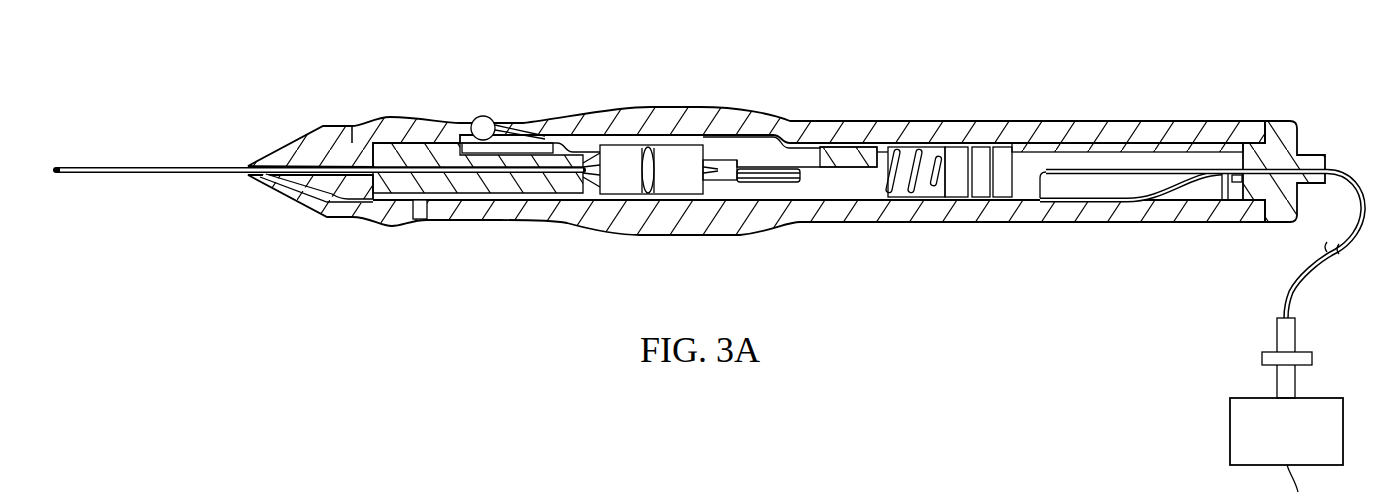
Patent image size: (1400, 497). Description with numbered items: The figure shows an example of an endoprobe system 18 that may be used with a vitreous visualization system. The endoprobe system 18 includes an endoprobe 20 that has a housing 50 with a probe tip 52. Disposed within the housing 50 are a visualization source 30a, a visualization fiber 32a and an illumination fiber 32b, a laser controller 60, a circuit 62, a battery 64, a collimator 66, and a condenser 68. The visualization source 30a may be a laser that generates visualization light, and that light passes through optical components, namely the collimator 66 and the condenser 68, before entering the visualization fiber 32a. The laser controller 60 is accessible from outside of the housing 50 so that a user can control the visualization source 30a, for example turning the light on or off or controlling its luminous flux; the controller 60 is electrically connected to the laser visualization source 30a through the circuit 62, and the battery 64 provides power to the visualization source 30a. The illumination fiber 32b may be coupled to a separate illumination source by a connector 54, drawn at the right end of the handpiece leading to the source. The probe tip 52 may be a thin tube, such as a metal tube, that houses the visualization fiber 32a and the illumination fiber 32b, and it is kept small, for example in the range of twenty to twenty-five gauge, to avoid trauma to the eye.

The endoprobe system 18 is at (997, 77).
The endoprobe 20 is at (777, 225).
The visualization source 30a is at (868, 133).
The visualization fiber 32a is at (490, 183).
The illumination fiber 32b is at (922, 200).
The housing 50 is at (1172, 212).
The probe tip 52 is at (155, 168).
The connector 54 is at (1262, 355).
The laser controller 60 is at (483, 115).
The circuit 62 is at (668, 118).
The battery 64 is at (1005, 200).
The collimator 66 is at (647, 180).
The condenser 68 is at (585, 193).